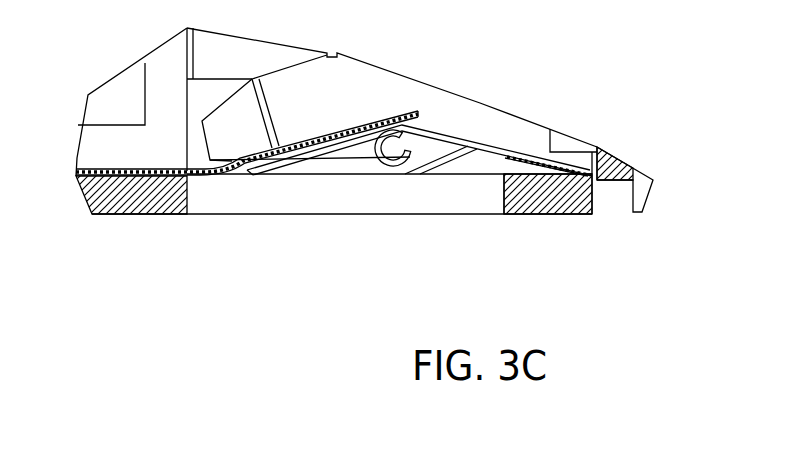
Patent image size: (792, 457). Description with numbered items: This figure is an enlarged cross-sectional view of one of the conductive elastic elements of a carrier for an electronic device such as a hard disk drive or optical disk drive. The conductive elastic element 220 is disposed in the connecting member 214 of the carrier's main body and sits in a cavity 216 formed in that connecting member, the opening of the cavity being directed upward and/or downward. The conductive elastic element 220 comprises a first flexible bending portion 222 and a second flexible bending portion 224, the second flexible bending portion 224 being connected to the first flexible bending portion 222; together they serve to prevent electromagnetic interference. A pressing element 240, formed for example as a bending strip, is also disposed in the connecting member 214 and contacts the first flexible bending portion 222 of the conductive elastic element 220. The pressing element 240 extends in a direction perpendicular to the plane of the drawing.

The connecting member 214 is at (137, 214).
The cavity 216 is at (471, 193).
The conductive elastic element 220 is at (419, 223).
The first flexible bending portion 222 is at (330, 141).
The second flexible bending portion 224 is at (376, 165).
The pressing element 240 is at (256, 160).